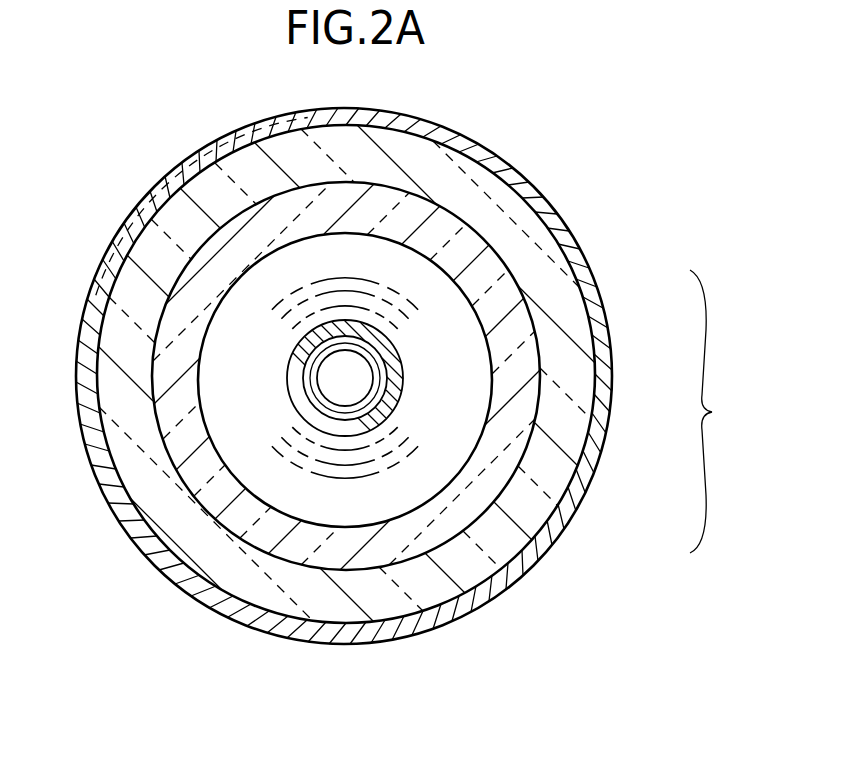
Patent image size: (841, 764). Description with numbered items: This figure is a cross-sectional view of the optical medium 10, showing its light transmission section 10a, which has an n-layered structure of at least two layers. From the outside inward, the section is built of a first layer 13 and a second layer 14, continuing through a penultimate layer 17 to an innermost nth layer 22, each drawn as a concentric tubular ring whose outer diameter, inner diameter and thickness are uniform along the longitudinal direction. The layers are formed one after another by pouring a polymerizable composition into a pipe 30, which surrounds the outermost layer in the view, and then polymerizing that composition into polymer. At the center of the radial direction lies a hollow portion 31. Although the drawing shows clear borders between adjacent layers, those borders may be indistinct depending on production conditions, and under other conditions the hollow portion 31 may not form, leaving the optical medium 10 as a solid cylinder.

The optical medium 10 is at (572, 171).
The light transmission section 10a is at (431, 435).
The first layer 13 is at (550, 294).
The second layer 14 is at (528, 342).
The (n−1)th layer 17 is at (397, 393).
The nth layer 22 is at (380, 400).
The pipe 30 is at (572, 258).
The hollow portion 31 is at (345, 378).